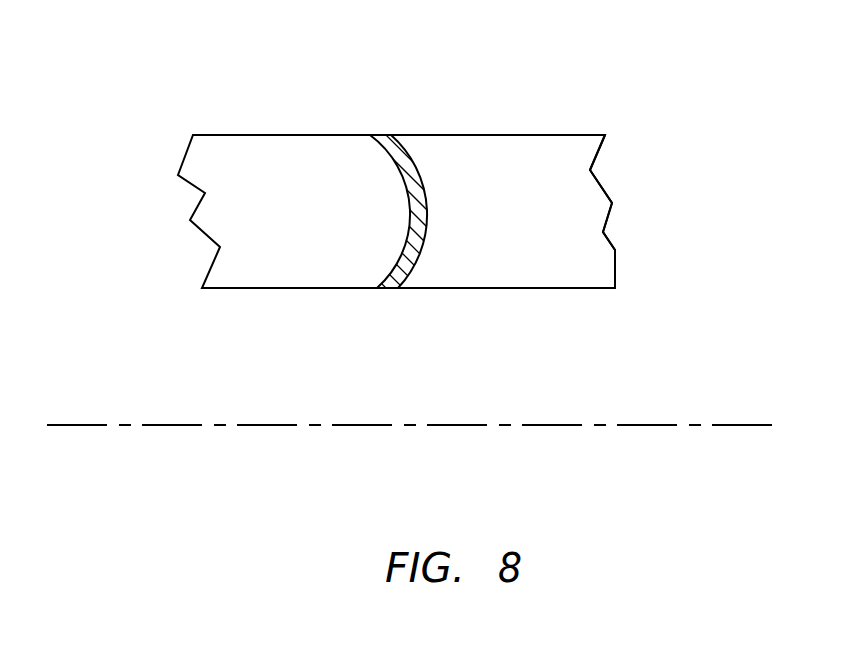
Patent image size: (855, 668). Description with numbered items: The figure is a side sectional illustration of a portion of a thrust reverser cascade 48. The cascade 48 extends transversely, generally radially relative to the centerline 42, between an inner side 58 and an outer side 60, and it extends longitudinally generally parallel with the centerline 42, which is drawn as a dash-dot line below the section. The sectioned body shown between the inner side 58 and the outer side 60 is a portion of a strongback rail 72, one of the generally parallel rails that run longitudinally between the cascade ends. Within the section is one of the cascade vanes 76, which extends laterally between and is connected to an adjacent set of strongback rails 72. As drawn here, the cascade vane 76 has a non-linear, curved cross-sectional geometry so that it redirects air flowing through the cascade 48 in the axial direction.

The thrust reverser cascade 48 is at (647, 100).
The outer side 60 is at (532, 135).
The inner side 58 is at (532, 288).
The cascade vane 76 is at (408, 266).
The strongback rail 72 is at (605, 235).
The centerline 42 is at (728, 425).